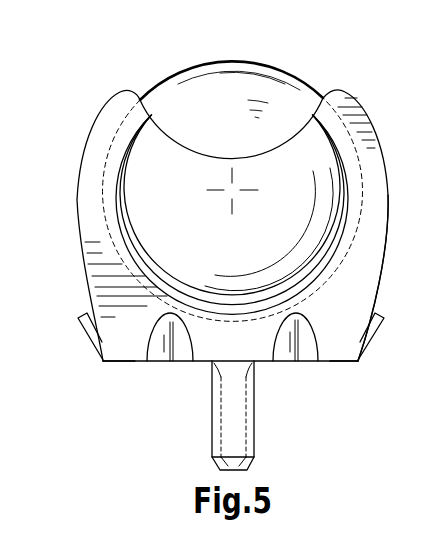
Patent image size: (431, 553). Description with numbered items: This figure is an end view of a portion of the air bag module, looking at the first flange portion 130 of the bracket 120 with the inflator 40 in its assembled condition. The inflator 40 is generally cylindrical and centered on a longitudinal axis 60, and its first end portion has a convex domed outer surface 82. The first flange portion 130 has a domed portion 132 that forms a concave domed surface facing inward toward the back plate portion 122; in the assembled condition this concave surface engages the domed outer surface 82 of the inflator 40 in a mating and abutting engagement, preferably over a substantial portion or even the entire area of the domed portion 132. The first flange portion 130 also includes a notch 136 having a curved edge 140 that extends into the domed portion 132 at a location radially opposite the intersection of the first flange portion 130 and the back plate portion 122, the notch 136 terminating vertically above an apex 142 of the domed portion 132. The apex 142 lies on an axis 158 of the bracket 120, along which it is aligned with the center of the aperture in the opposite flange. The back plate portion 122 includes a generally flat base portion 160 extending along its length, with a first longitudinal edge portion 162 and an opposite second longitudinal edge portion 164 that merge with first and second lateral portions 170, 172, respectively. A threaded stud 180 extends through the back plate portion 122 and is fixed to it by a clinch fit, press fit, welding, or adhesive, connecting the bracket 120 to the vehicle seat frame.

The inflator 40 is at (238, 70).
The convex domed outer surface 82 is at (230, 108).
The first flange portion 130 is at (111, 123).
The domed portion 132 is at (170, 205).
The notch 136 is at (231, 138).
The curved edge 140 is at (292, 137).
The longitudinal axis 60 is at (230, 191).
The apex 142 is at (269, 229).
The axis of the bracket 158 is at (233, 209).
The bracket 120 is at (122, 350).
The back plate portion 122 is at (338, 362).
The base portion 160 is at (130, 363).
The first longitudinal edge portion 162 is at (104, 363).
The second longitudinal edge portion 164 is at (367, 362).
The first lateral portion 170 is at (83, 325).
The second lateral portion 172 is at (373, 330).
The threaded stud 180 is at (228, 415).